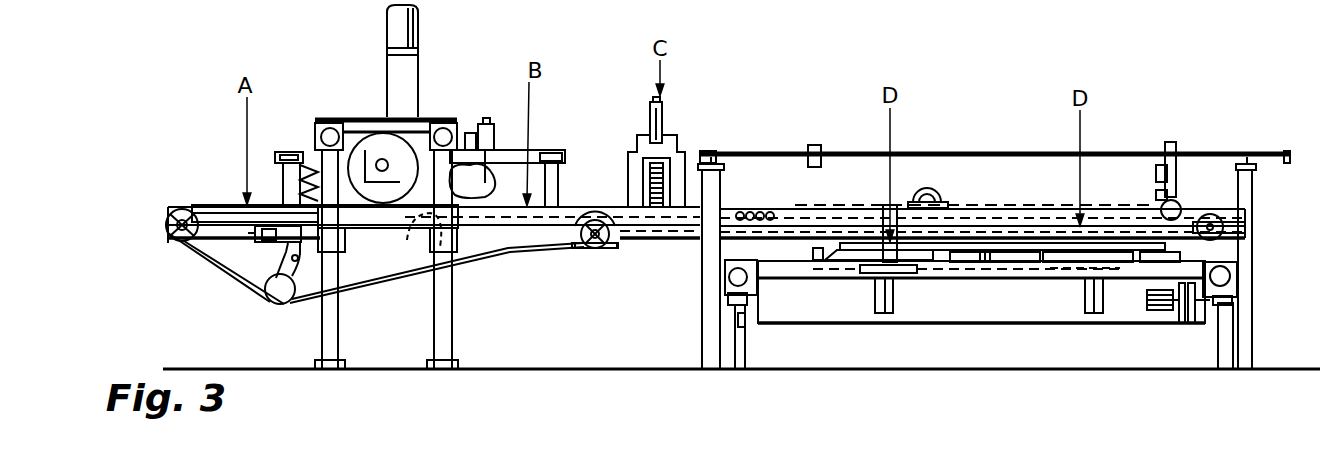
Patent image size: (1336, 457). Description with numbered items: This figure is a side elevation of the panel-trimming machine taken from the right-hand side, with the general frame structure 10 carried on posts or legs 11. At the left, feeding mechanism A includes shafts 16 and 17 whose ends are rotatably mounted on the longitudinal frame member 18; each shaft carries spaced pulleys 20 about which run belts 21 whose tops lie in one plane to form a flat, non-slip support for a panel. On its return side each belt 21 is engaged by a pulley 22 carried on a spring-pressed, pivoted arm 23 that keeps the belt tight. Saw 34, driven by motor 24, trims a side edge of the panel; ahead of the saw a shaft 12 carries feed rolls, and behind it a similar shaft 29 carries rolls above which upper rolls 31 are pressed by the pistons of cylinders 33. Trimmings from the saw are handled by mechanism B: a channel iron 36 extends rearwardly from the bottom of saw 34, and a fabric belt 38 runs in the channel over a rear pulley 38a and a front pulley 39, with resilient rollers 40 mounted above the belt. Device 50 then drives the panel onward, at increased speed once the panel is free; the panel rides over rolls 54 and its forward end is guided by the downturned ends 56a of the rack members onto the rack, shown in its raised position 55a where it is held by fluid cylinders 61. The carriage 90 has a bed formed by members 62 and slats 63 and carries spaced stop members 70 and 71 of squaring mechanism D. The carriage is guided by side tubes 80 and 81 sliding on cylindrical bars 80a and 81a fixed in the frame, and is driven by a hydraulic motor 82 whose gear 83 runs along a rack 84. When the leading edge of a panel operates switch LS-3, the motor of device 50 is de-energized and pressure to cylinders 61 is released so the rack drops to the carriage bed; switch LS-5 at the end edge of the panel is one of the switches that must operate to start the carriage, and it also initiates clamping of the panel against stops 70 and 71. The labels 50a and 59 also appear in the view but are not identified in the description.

The general frame structure 10 is at (668, 242).
The posts or legs 11 is at (453, 315).
The shaft 12 is at (313, 215).
The shaft 16 is at (188, 246).
The shaft 17 is at (605, 245).
The longitudinal frame member 18 is at (198, 208).
The pulleys 20 is at (172, 210).
The belts 21 is at (205, 207).
The pulley 22 is at (282, 268).
The arm 23 is at (295, 304).
The motor 24 is at (423, 116).
The shaft 29 is at (468, 220).
The rolls 31 is at (468, 132).
The cylinders 33 is at (492, 125).
The saw 34 is at (378, 115).
The channel iron 36 is at (620, 207).
The belt 38 is at (1012, 215).
The pulley 38a is at (1250, 235).
The front pulley 39 is at (405, 250).
The resilient rollers 40 is at (1180, 205).
The device 50 is at (635, 140).
The plunger 50a is at (668, 122).
The rolls 54 is at (752, 210).
The raised position of rack 55a is at (853, 205).
The downturned ends 56a is at (870, 262).
The dome cover 59 is at (935, 195).
The fluid cylinders 61 is at (894, 300).
The members 62 is at (845, 280).
The slats 63 is at (812, 254).
The stop member 70 is at (1072, 265).
The stop member 71 is at (928, 262).
The side tube 80 is at (1240, 282).
The cylindrical bar 80a is at (1232, 273).
The side tube 81 is at (727, 268).
The cylindrical bar 81a is at (764, 280).
The motor 82 is at (1152, 312).
The gear 83 is at (1190, 323).
The rack 84 is at (730, 315).
The carriage 90 is at (1005, 275).
The switch LS-5 is at (1157, 168).
The switch LS-3 is at (1155, 192).